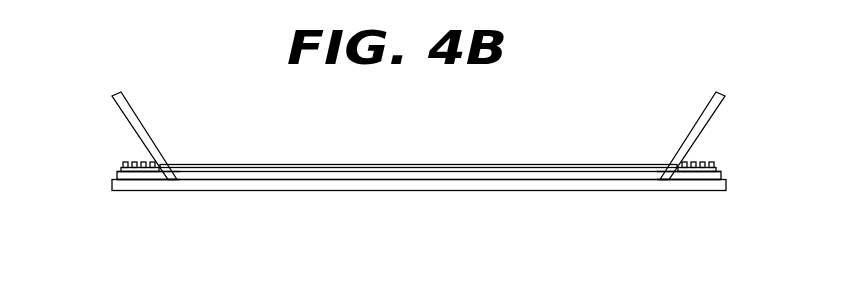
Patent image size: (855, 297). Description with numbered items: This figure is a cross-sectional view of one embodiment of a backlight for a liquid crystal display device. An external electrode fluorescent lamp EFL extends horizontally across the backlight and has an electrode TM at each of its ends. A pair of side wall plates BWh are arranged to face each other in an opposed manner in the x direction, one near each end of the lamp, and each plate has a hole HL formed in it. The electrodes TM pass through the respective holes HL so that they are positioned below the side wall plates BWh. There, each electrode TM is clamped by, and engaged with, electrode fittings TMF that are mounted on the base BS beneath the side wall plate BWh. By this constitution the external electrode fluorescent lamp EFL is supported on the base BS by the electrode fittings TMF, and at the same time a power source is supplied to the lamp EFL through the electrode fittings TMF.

The base BS is at (530, 181).
The hole HL is at (168, 165).
The external electrode fluorescent lamp EFL is at (475, 162).
The electrode fittings TMF is at (130, 158).
The side wall plates BWh is at (143, 123).
The electrode TM is at (155, 176).